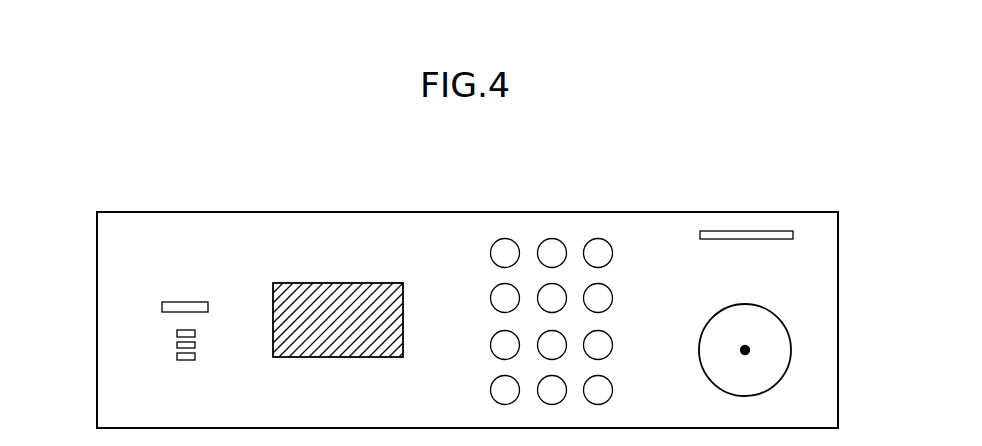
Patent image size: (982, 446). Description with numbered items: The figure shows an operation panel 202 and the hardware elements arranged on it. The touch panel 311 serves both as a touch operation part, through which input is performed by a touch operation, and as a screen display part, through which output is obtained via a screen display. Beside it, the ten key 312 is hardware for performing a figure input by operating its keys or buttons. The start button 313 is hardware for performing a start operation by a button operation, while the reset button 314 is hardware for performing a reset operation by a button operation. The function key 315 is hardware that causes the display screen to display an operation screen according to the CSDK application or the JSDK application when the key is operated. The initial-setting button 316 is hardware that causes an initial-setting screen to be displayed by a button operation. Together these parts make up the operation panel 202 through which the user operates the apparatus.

The operation panel 202 is at (143, 176).
The touch panel 311 is at (338, 283).
The ten key 312 is at (553, 238).
The start button 313 is at (791, 353).
The reset button 314 is at (793, 237).
The function key 315 is at (177, 342).
The initial-setting button 316 is at (162, 305).